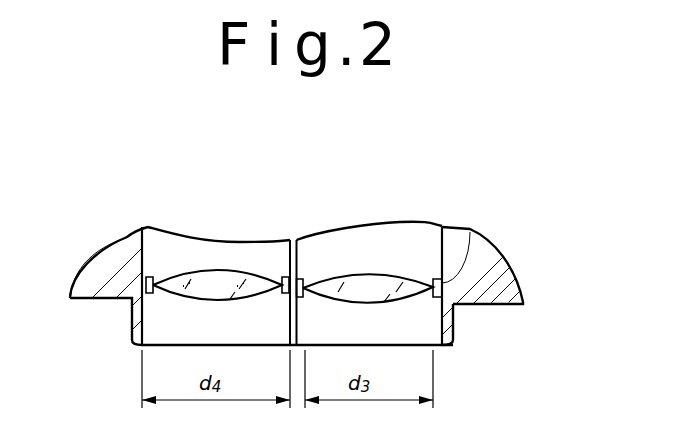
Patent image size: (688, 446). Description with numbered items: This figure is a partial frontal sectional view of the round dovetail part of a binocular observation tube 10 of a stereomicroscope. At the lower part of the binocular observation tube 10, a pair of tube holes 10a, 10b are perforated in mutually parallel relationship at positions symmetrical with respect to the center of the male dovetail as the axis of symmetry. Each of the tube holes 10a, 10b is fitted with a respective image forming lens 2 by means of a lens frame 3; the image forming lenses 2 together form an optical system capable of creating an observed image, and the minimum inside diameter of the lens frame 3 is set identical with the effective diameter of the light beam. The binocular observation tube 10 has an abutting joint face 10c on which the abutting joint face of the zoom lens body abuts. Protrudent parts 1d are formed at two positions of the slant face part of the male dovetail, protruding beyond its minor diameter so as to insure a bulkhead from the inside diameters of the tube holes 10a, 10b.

The binocular observation tube 10 is at (120, 250).
The tube hole 10a is at (214, 254).
The tube hole 10b is at (355, 243).
The image forming lens 2 is at (382, 283).
The lens frame 3 is at (470, 229).
The abutting joint face 10c is at (497, 306).
The protrudent part 1d is at (455, 343).